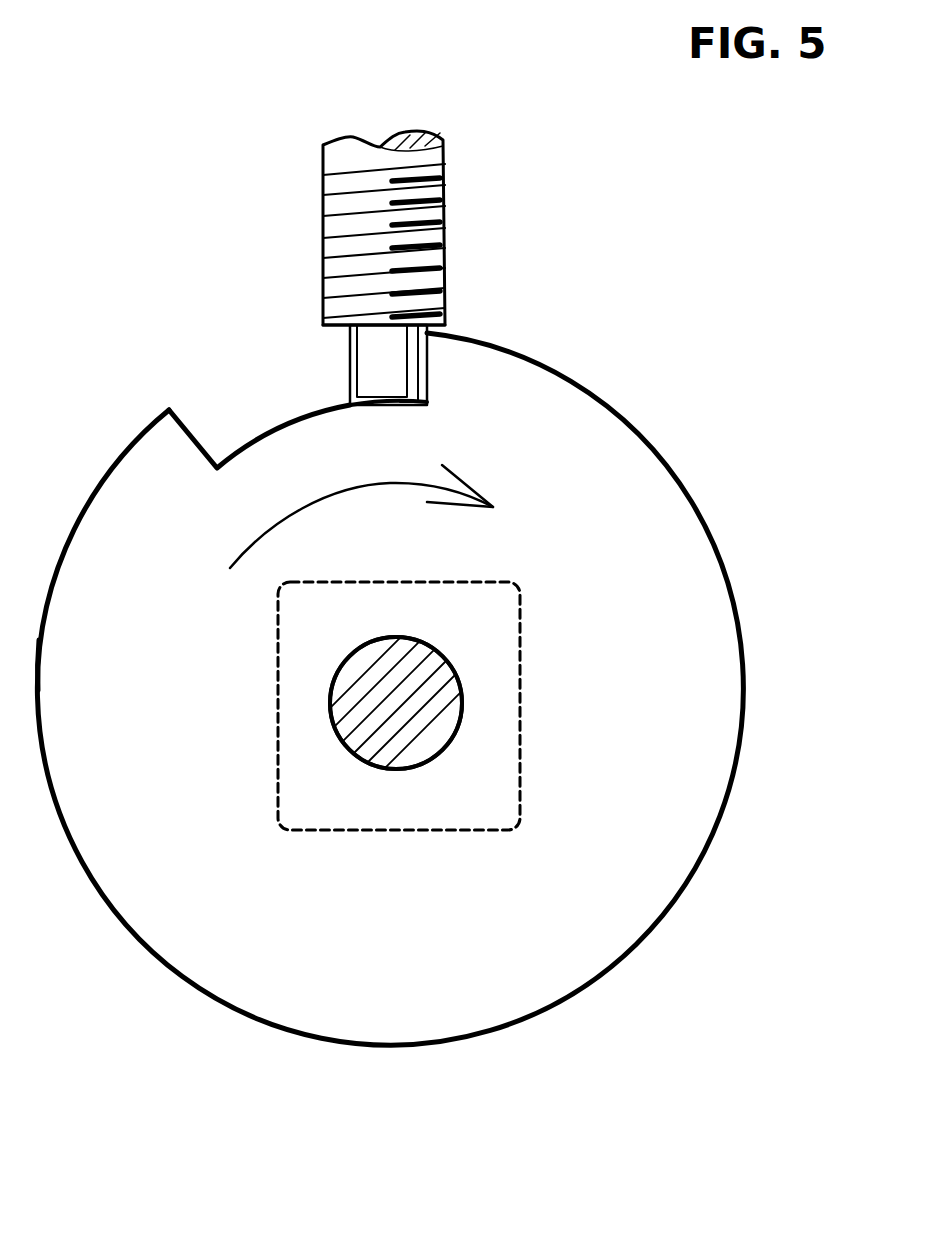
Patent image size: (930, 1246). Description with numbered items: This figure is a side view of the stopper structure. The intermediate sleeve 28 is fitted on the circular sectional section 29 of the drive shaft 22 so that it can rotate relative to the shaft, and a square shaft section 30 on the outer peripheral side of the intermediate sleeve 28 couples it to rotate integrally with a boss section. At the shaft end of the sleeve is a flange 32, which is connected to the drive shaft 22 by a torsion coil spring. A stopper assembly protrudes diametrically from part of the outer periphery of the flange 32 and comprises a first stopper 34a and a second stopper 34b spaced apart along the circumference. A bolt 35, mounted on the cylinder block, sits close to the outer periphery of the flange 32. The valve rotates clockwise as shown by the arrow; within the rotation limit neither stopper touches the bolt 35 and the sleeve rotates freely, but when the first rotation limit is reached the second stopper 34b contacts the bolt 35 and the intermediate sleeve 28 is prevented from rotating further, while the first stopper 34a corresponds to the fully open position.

The drive shaft 22 is at (450, 697).
The circular sectional section 29 is at (484, 703).
The intermediate sleeve 28 is at (657, 484).
The square shaft section 30 is at (457, 832).
The flange 32 is at (145, 818).
The first stopper 34a is at (430, 380).
The second stopper 34b is at (156, 418).
The bolt 35 is at (332, 283).